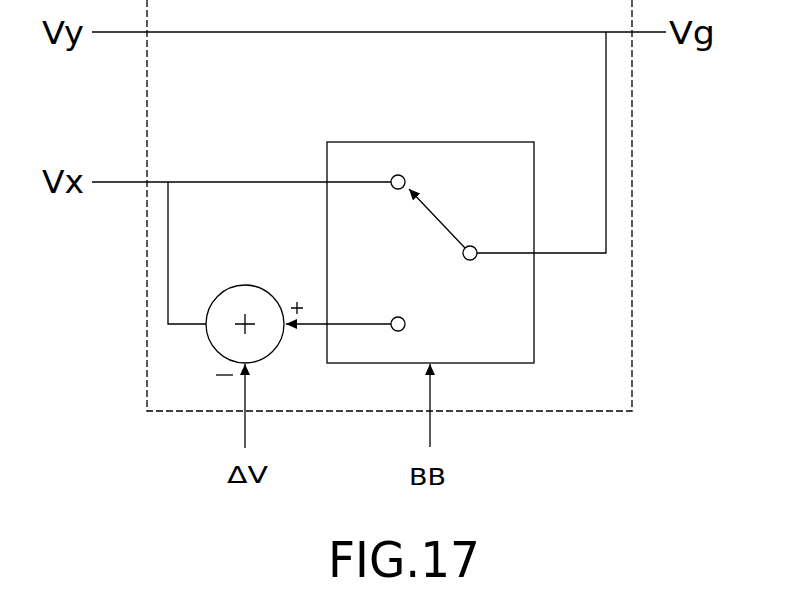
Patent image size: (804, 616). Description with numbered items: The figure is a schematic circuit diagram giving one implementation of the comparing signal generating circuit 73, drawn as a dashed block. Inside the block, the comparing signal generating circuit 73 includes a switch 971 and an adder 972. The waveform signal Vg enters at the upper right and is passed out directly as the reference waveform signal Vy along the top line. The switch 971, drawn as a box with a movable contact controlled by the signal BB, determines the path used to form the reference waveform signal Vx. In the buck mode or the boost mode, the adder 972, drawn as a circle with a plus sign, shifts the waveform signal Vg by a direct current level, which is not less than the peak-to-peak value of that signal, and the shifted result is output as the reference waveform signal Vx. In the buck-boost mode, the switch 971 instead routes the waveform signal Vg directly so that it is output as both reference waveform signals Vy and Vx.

The comparing signal generating circuit 73 is at (626, 523).
The switch 971 is at (366, 142).
The adder 972 is at (245, 285).